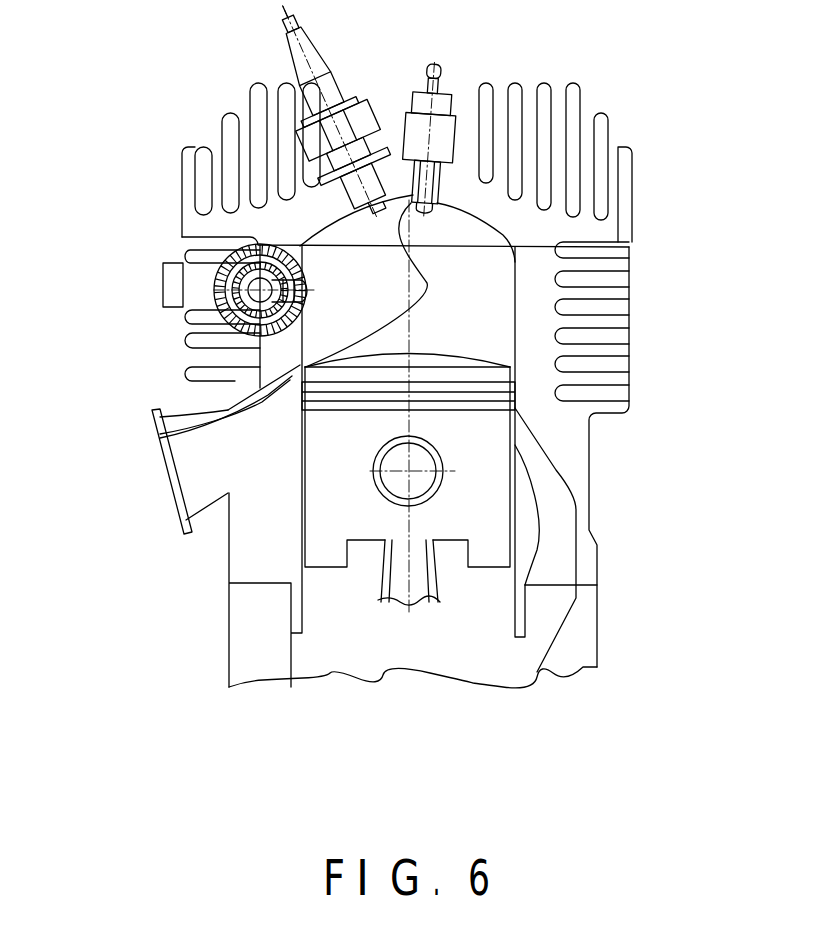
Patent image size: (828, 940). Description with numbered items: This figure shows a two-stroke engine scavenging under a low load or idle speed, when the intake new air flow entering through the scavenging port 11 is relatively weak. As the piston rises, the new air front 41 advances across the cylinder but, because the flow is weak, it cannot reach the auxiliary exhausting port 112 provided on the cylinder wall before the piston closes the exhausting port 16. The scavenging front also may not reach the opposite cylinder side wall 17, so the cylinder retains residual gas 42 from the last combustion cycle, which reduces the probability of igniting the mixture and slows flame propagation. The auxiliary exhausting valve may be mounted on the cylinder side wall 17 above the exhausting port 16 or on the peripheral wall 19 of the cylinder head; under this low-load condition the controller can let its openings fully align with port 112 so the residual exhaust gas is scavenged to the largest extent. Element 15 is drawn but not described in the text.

The scavenging port 11 is at (522, 435).
The cylinder head 15 is at (530, 232).
The exhausting port 16 is at (300, 434).
The cylinder side wall 17 is at (262, 371).
The peripheral wall of the cylinder head 19 is at (320, 203).
The new air front 41 is at (457, 222).
The residual gas 42 is at (357, 285).
The auxiliary exhausting port 112 is at (247, 340).